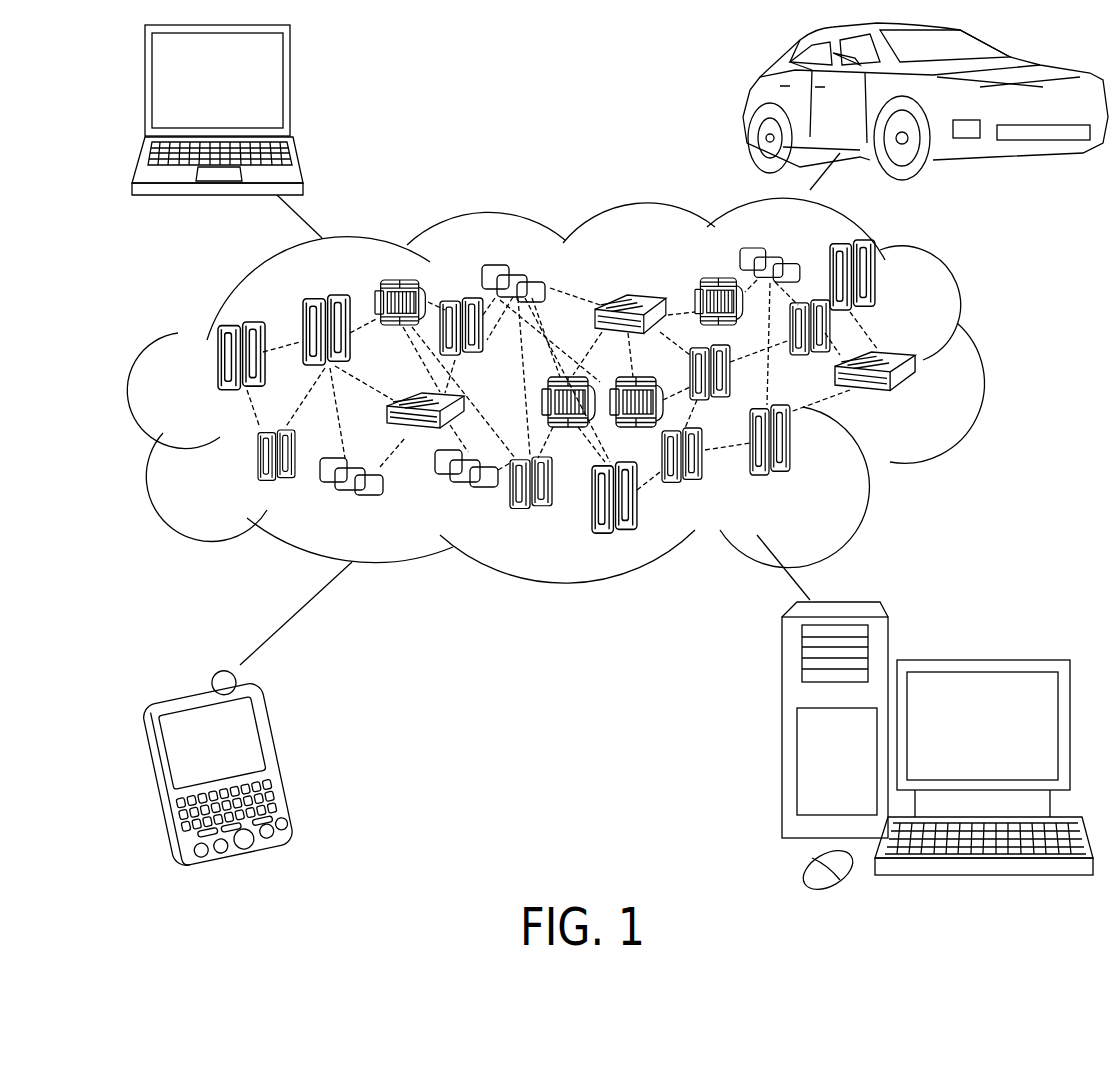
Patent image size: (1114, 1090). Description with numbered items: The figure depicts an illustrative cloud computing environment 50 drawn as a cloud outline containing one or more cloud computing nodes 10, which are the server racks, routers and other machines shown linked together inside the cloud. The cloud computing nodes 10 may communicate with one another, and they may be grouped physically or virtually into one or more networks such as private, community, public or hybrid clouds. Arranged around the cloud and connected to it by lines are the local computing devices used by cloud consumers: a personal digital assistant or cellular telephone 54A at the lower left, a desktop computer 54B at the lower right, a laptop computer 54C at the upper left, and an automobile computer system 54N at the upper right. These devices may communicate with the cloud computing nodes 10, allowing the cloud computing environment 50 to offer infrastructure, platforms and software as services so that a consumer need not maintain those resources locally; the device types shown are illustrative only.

The cloud computing nodes 10 is at (922, 398).
The cloud computing environment 50 is at (980, 363).
The personal digital assistant (PDA) or cellular telephone 54A is at (282, 760).
The desktop computer 54B is at (975, 660).
The laptop computer 54C is at (290, 88).
The automobile computer system 54N is at (745, 100).